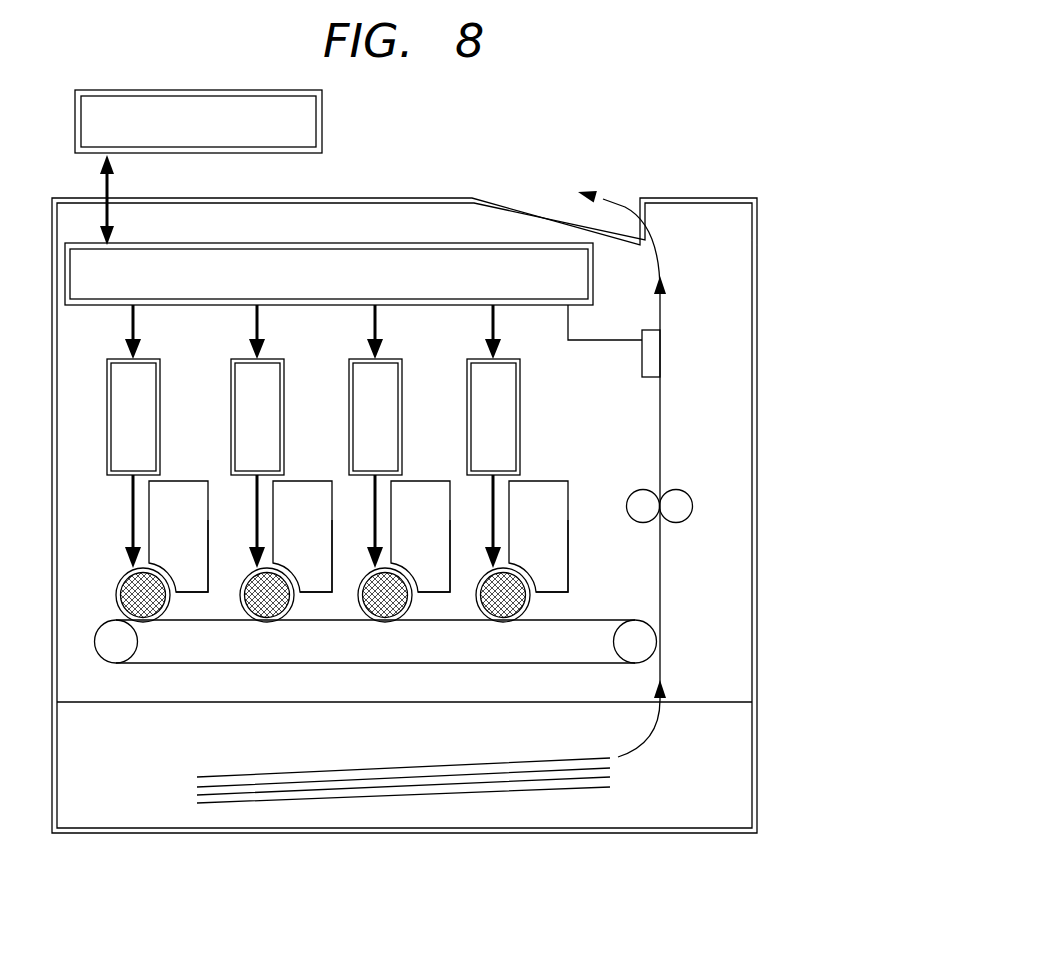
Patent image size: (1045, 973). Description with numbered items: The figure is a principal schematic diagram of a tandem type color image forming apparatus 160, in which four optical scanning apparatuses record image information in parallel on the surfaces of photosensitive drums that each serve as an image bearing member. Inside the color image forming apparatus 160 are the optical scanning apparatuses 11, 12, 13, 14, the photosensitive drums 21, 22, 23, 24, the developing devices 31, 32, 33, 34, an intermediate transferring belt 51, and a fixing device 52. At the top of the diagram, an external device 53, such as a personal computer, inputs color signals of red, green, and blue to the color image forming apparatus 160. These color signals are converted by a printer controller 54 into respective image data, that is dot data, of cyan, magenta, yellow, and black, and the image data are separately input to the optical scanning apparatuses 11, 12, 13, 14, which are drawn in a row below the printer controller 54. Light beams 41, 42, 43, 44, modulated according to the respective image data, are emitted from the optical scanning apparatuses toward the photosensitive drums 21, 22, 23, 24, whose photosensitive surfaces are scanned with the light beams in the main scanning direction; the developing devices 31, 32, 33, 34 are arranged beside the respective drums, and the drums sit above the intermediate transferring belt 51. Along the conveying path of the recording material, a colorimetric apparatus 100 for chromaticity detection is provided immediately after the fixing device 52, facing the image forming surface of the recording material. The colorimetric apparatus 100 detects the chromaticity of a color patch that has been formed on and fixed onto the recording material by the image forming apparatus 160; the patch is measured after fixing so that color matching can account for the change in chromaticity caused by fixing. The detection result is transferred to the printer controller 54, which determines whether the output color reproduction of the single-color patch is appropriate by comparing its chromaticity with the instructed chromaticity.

The optical scanning apparatus 11 is at (115, 357).
The optical scanning apparatus 12 is at (239, 357).
The optical scanning apparatus 13 is at (400, 357).
The optical scanning apparatus 14 is at (518, 357).
The photosensitive drum 21 is at (145, 622).
The photosensitive drum 22 is at (268, 622).
The photosensitive drum 23 is at (388, 622).
The photosensitive drum 24 is at (506, 622).
The developing device 31 is at (196, 481).
The developing device 32 is at (321, 481).
The developing device 33 is at (438, 481).
The developing device 34 is at (556, 481).
The light beam 41 is at (209, 550).
The light beam 42 is at (333, 550).
The light beam 43 is at (451, 550).
The light beam 44 is at (569, 552).
The intermediate transferring belt 51 is at (473, 664).
The fixing device 52 is at (678, 491).
The external device 53 is at (322, 108).
The printer controller 54 is at (406, 242).
The colorimetric apparatus 100 is at (661, 345).
The color image forming apparatus 160 is at (670, 197).